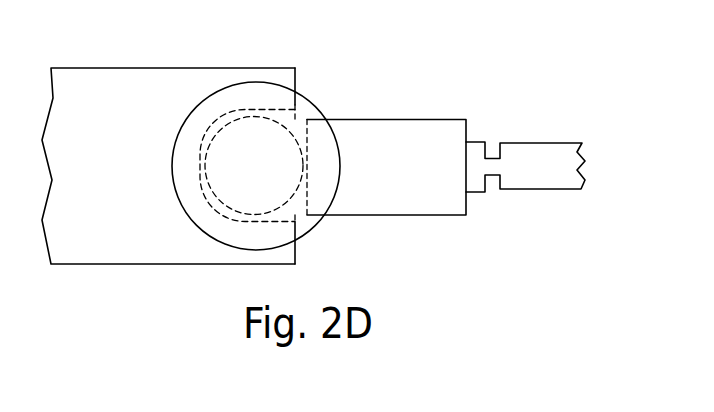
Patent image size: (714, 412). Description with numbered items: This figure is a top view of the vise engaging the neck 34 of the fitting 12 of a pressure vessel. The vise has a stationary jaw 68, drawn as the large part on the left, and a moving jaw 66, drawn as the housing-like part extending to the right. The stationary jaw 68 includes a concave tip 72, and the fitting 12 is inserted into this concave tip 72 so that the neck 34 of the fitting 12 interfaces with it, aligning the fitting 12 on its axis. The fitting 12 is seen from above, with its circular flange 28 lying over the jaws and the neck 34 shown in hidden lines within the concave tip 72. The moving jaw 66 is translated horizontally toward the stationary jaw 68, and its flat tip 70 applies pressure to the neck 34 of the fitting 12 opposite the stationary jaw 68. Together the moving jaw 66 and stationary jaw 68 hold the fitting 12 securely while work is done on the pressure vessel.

The fitting 12 is at (312, 230).
The flange 28 is at (340, 175).
The neck 34 is at (281, 118).
The moving jaw 66 is at (427, 130).
The stationary jaw 68 is at (122, 249).
The flat tip 70 is at (296, 132).
The concave tip 72 is at (236, 112).